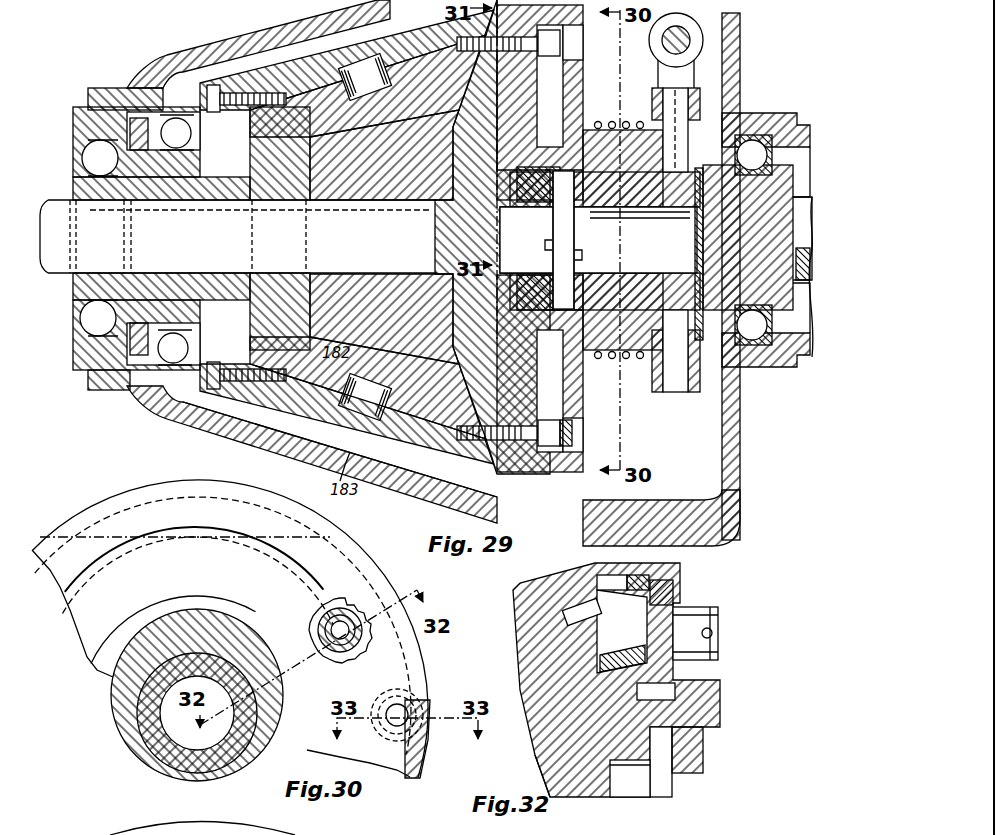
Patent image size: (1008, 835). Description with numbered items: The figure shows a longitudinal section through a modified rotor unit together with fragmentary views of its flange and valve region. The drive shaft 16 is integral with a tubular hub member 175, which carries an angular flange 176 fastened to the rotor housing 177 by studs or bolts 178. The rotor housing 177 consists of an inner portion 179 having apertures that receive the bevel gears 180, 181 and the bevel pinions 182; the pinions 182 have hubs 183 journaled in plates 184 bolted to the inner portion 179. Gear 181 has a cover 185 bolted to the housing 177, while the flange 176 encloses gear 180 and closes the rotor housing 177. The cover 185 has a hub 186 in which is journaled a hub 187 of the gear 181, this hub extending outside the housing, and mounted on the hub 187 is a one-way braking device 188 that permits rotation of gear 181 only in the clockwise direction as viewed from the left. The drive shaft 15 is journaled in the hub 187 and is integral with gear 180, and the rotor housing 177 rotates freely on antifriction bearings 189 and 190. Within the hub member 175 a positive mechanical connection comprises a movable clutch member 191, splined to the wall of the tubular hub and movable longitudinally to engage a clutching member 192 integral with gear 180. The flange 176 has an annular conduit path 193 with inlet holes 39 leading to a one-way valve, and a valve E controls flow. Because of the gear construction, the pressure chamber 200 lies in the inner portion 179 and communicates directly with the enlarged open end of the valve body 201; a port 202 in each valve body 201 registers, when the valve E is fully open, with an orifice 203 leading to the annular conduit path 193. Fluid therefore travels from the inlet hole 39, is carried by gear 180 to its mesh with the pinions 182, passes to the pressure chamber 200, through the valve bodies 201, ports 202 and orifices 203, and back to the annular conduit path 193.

In FIG. 29, the drive shaft 15 is at (55, 250).
In FIG. 29, the drive shaft 16 is at (812, 357).
In FIG. 29, the tubular hub member 175 is at (588, 140).
In FIG. 30, the tubular hub member 175 is at (107, 668).
In FIG. 32, the tubular hub member 175 is at (670, 713).
In FIG. 29, the angular flange 176 is at (583, 40).
In FIG. 30, the angular flange 176 is at (128, 515).
In FIG. 29, the rotor housing 177 is at (395, 478).
In FIG. 29, the studs or bolts 178 is at (548, 424).
In FIG. 29, the inner portion 179 is at (384, 155).
In FIG. 32, the inner portion 179 is at (520, 627).
In FIG. 29, the bevel gear 180 is at (492, 237).
In FIG. 32, the bevel gear 180 is at (557, 793).
In FIG. 29, the bevel gear 181 is at (280, 153).
In FIG. 29, the bevel pinions 182 is at (368, 86).
In FIG. 29, the hubs 183 is at (380, 36).
In FIG. 29, the plates 184 is at (275, 70).
In FIG. 30, the plates 184 is at (160, 833).
In FIG. 29, the cover 185 is at (218, 418).
In FIG. 29, the hub 186 is at (180, 164).
In FIG. 29, the hub 187 is at (80, 320).
In FIG. 29, the one-way braking device 188 is at (84, 158).
In FIG. 29, the antifriction bearing 189 is at (148, 380).
In FIG. 29, the antifriction bearing 190 is at (754, 140).
In FIG. 29, the movable clutch member 191 is at (656, 261).
In FIG. 30, the movable clutch member 191 is at (143, 743).
In FIG. 32, the movable clutch member 191 is at (662, 772).
In FIG. 29, the clutching member 192 is at (560, 245).
In FIG. 32, the clutching member 192 is at (637, 783).
In FIG. 29, the annular conduit path 193 is at (566, 438).
In FIG. 30, the annular conduit path 193 is at (402, 757).
In FIG. 32, the annular conduit path 193 is at (675, 580).
In FIG. 30, the inlet holes 39 is at (410, 730).
In FIG. 32, the pressure chamber 200 is at (580, 570).
In FIG. 32, the valve body 201 is at (610, 583).
In FIG. 32, the port 202 is at (633, 580).
In FIG. 32, the orifice 203 is at (660, 592).
In FIG. 32, the valve E is at (622, 631).